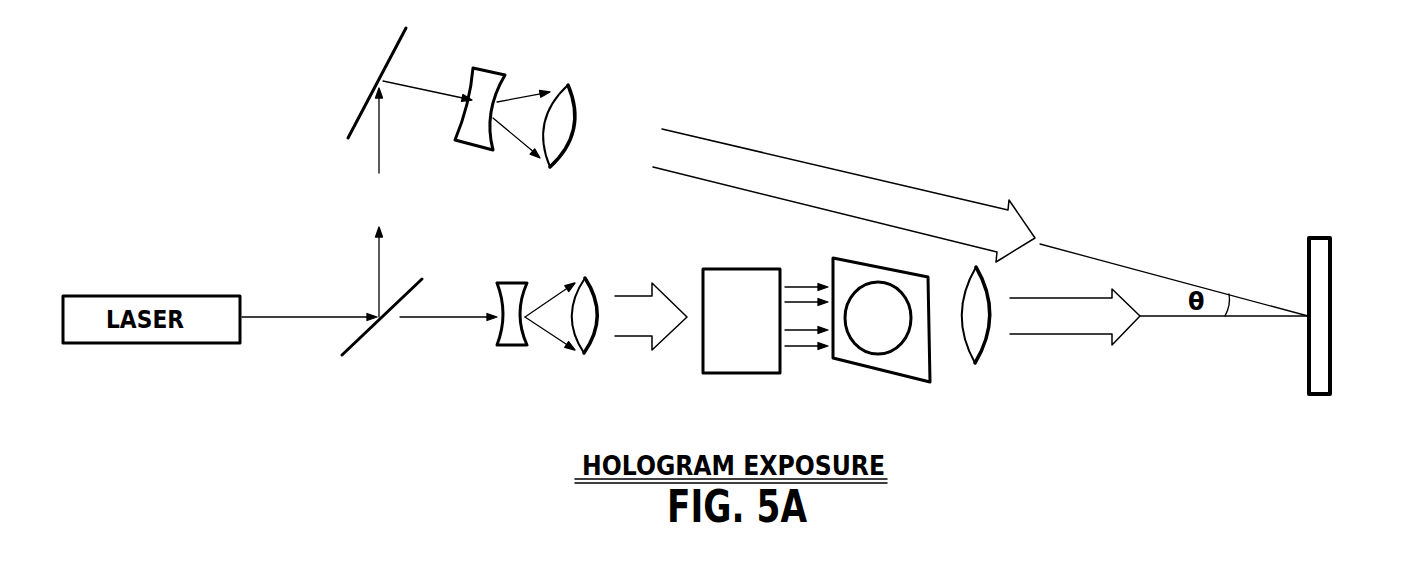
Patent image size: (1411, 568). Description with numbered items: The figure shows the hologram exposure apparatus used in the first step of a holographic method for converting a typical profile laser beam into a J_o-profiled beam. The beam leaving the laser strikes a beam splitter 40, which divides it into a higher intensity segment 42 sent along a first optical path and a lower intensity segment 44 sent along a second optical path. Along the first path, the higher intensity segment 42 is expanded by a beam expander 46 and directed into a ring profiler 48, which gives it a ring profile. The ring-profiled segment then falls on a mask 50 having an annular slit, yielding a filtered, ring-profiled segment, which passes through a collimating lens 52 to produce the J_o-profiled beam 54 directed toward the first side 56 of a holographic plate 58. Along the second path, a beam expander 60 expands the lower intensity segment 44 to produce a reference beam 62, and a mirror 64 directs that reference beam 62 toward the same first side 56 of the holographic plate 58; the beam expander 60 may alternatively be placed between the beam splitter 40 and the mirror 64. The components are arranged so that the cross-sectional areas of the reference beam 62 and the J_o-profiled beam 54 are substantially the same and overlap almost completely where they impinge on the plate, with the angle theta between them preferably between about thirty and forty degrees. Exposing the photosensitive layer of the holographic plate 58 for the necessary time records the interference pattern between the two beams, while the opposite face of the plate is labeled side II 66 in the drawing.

The beam splitter 40 is at (376, 432).
The higher intensity segment 42 is at (448, 301).
The lower intensity segment 44 is at (379, 150).
The beam expander 46 is at (592, 420).
The ring profiler 48 is at (779, 438).
The mask 50 is at (911, 243).
The collimating lens 52 is at (997, 363).
The J_o-profiled beam 54 is at (1113, 340).
The first side 56 is at (1307, 288).
The holographic plate 58 is at (1366, 468).
The beam expander 60 is at (565, 91).
The reference beam 62 is at (980, 213).
The mirror 64 is at (340, 107).
The side II of holographic plate 66 is at (1331, 289).